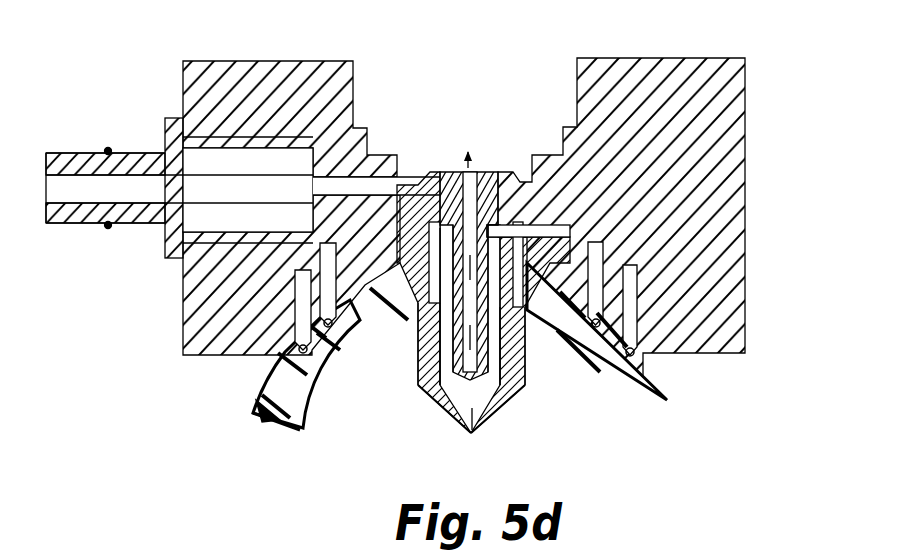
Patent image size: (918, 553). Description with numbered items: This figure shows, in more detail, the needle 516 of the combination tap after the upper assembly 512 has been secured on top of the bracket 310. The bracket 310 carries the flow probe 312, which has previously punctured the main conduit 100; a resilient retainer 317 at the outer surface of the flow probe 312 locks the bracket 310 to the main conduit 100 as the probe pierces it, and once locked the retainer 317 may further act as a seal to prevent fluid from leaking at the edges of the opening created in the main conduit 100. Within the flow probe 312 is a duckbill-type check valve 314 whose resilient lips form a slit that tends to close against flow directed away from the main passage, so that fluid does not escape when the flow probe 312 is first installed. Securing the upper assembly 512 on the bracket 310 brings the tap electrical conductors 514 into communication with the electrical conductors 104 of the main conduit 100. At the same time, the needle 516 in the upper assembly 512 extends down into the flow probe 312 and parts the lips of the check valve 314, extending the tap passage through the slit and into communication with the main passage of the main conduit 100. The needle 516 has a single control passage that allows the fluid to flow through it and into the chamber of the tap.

The main conduit 100 is at (676, 388).
The electrical conductors 104 is at (330, 322).
The bracket 310 is at (553, 228).
The flow probe 312 is at (526, 393).
The duckbill-type check valve 314 is at (449, 418).
The resilient retainer 317 is at (404, 340).
The upper assembly 512 is at (687, 57).
The tap electrical conductors 514 is at (310, 249).
The needle 516 is at (438, 170).